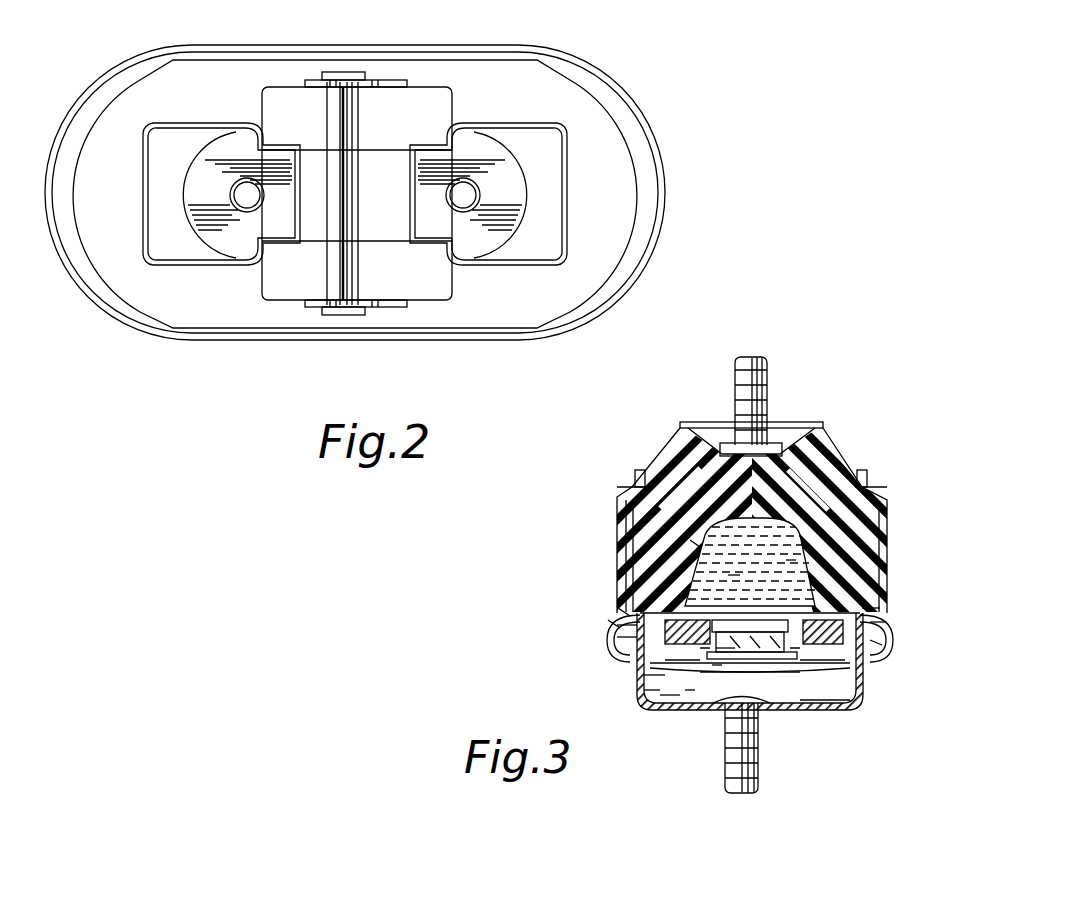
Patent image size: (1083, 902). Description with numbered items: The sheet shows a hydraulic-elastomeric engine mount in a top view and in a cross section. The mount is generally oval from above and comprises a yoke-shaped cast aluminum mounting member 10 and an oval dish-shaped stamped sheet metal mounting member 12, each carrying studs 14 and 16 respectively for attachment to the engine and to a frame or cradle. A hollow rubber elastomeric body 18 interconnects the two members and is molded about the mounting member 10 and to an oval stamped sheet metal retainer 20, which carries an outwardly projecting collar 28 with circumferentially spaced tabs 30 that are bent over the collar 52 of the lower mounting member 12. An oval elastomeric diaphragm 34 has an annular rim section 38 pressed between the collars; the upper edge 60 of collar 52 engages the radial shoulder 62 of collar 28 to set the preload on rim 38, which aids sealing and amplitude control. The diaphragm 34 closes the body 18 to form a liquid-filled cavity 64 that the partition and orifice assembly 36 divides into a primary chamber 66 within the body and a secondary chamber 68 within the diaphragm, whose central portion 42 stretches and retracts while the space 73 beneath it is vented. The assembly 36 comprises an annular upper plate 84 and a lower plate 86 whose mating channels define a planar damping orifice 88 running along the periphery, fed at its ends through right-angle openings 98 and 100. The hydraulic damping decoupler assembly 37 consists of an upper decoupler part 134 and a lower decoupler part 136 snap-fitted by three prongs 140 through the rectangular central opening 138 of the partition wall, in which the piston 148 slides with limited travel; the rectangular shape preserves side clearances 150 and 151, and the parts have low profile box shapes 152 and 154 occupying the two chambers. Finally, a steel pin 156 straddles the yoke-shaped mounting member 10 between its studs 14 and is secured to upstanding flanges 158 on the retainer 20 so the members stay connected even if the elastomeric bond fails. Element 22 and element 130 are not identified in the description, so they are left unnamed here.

In FIG. 2, the mounting member 10 is at (227, 147).
In FIG. 3, the mounting member 10 is at (794, 422).
In FIG. 3, the mounting member 12 is at (818, 712).
In FIG. 2, the studs 14 is at (250, 202).
In FIG. 3, the studs 14 is at (766, 378).
In FIG. 3, the studs 16 is at (725, 782).
In FIG. 2, the elastomeric body 18 is at (597, 98).
In FIG. 3, the elastomeric body 18 is at (822, 460).
In FIG. 2, the retainer 20 is at (647, 135).
In FIG. 3, the retainer 20 is at (625, 612).
In FIG. 3, the metal insert 22 is at (802, 518).
In FIG. 2, the collar 28 is at (665, 182).
In FIG. 3, the collar 28 is at (617, 637).
In FIG. 3, the tabs 30 is at (627, 660).
In FIG. 3, the elastomeric diaphragm 34 is at (673, 662).
In FIG. 3, the partition and orifice assembly 36 is at (805, 692).
In FIG. 3, the hydraulic damping decoupler assembly 37 is at (790, 692).
In FIG. 3, the rim section 38 is at (617, 625).
In FIG. 3, the central portion 42 is at (768, 692).
In FIG. 3, the collar 52 is at (878, 640).
In FIG. 3, the upper edge 60 is at (608, 623).
In FIG. 3, the radial shoulder 62 is at (880, 622).
In FIG. 3, the cavity 64 is at (800, 507).
In FIG. 3, the primary chamber 66 is at (835, 602).
In FIG. 3, the secondary chamber 68 is at (838, 668).
In FIG. 3, the space 73 is at (690, 692).
In FIG. 3, the upper plate 84 is at (870, 610).
In FIG. 3, the lower plate 86 is at (820, 662).
In FIG. 3, the damping orifice 88 is at (650, 675).
In FIG. 3, the opening 98 is at (678, 535).
In FIG. 3, the opening 100 is at (642, 697).
In FIG. 3, the decoupler support 130 is at (695, 665).
In FIG. 3, the decoupler part 134 is at (748, 618).
In FIG. 3, the decoupler part 136 is at (718, 692).
In FIG. 3, the central opening 138 is at (722, 617).
In FIG. 3, the prongs 140 is at (752, 660).
In FIG. 3, the piston 148 is at (790, 560).
In FIG. 3, the side clearance 150 is at (812, 612).
In FIG. 3, the side clearance 151 is at (795, 660).
In FIG. 3, the box shape 152 is at (728, 655).
In FIG. 3, the box shape 154 is at (730, 575).
In FIG. 2, the steel pin 156 is at (330, 278).
In FIG. 3, the steel pin 156 is at (617, 492).
In FIG. 2, the flanges 158 is at (388, 78).
In FIG. 3, the flanges 158 is at (641, 470).